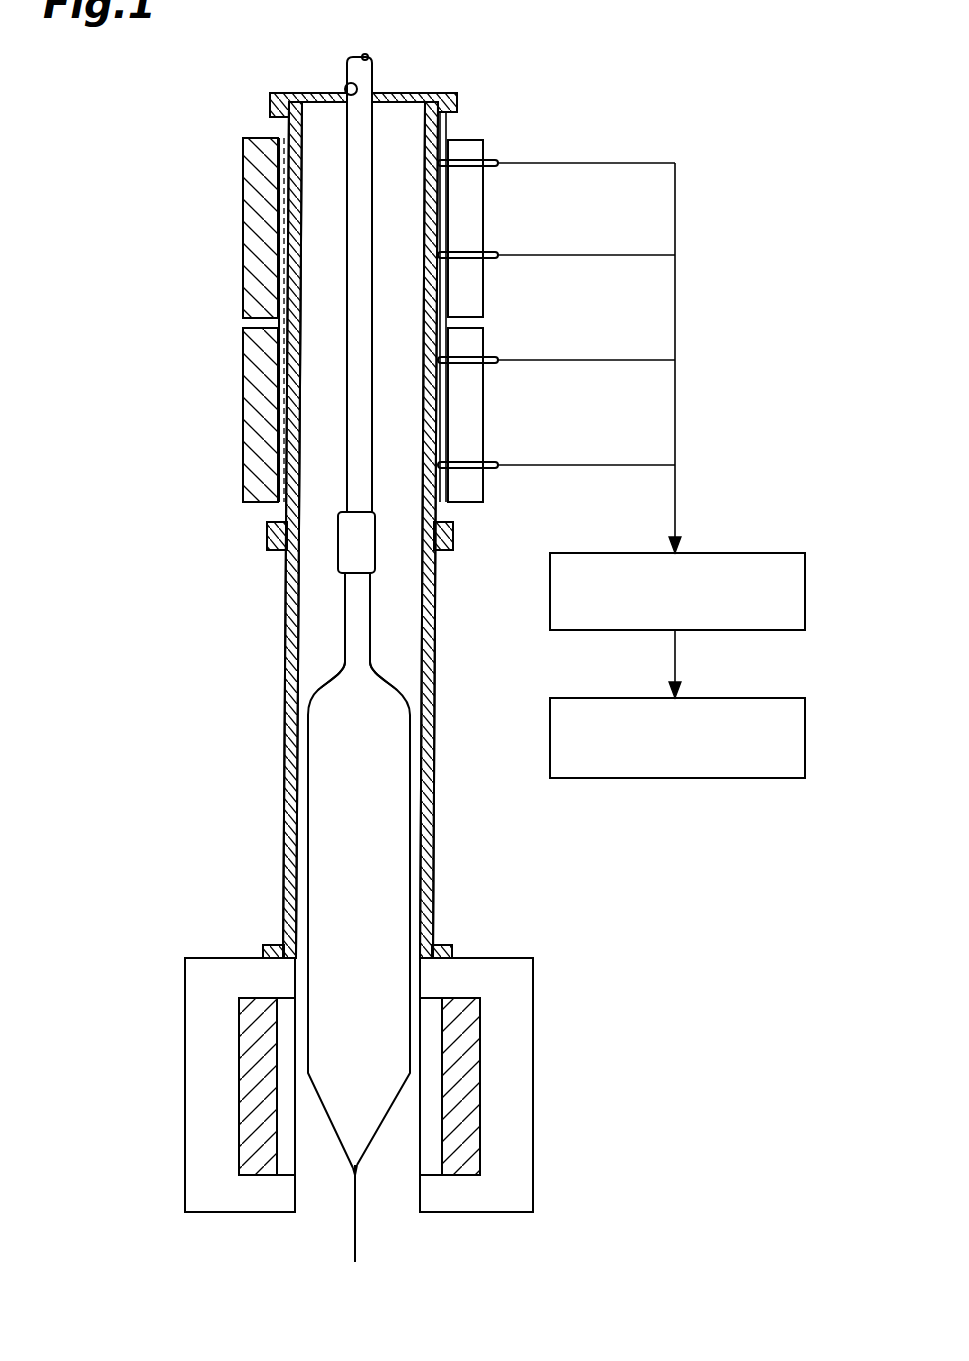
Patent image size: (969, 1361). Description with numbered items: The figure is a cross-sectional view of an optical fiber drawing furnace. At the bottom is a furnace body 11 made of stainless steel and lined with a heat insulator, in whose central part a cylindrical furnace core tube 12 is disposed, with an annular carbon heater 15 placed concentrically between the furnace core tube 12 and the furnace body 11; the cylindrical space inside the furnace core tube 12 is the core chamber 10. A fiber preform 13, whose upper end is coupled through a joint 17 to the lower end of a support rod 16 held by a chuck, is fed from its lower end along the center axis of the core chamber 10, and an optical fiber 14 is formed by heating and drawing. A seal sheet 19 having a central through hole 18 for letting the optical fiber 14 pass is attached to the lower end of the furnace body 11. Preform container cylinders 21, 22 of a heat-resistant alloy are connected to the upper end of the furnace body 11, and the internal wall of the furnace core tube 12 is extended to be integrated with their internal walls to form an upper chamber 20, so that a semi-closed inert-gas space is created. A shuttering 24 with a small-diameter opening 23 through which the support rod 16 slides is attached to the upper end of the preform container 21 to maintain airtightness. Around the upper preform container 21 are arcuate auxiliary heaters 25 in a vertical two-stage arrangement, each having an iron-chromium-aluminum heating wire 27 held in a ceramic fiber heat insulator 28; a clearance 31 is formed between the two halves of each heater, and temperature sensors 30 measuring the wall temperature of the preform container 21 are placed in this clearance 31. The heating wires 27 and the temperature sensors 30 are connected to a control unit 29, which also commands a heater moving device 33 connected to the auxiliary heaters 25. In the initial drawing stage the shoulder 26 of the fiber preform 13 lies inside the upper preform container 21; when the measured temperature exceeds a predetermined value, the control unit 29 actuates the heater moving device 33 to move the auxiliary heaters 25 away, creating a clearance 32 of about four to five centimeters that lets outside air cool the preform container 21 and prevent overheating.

The core chamber 10 is at (397, 1167).
The furnace body 11 is at (533, 1010).
The furnace core tube 12 is at (423, 1092).
The fiber preform 13 is at (385, 845).
The optical fiber 14 is at (358, 1243).
The carbon heater 15 is at (243, 1082).
The support rod 16 is at (365, 74).
The joint 17 is at (365, 555).
The through hole 18 is at (344, 1214).
The seal sheet 19 is at (298, 1213).
The upper chamber 20 is at (255, 197).
The upper preform container 21 is at (293, 298).
The preform container cylinder 22 is at (286, 653).
The opening 23 is at (349, 85).
The shuttering 24 is at (289, 93).
The auxiliary heaters 25 is at (236, 240).
The shoulder 26 is at (390, 683).
The heating wire 27 is at (440, 218).
The heat insulator 28 is at (255, 287).
The control unit 29 is at (748, 553).
The temperature sensors 30 is at (498, 163).
The clearance 31 is at (468, 287).
The clearance 32 is at (300, 180).
The heater moving device 33 is at (740, 778).